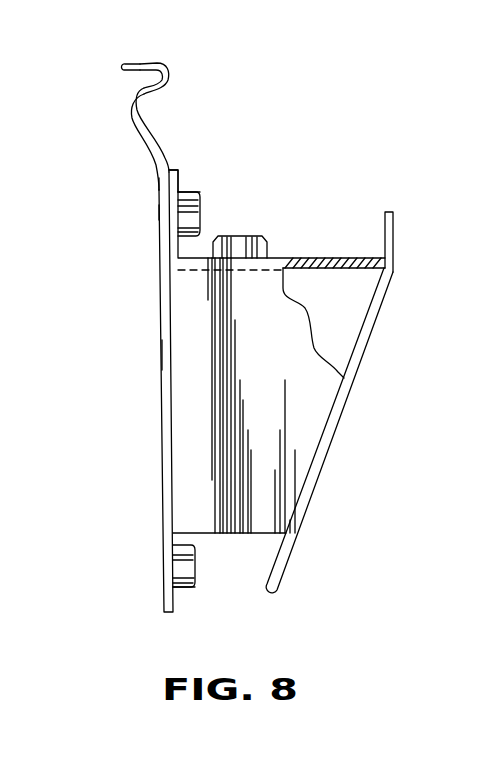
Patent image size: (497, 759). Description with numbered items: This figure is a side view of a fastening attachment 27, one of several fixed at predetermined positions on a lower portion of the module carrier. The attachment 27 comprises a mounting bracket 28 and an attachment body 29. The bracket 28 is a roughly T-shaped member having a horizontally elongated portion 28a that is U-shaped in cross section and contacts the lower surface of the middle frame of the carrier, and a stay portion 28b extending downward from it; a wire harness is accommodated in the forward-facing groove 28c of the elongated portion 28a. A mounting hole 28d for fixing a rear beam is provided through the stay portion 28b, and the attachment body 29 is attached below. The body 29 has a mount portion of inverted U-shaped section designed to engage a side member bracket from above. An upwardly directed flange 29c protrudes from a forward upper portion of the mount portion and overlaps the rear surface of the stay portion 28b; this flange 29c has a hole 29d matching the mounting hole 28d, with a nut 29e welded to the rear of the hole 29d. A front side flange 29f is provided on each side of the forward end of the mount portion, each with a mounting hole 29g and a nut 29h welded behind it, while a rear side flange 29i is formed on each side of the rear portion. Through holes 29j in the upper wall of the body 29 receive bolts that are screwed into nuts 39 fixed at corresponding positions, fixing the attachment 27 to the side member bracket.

The attachment 27 is at (158, 478).
The mounting bracket 28 is at (145, 123).
The horizontally elongated portion 28a is at (168, 75).
The stay portion 28b is at (158, 183).
The forward-facing groove 28c is at (142, 82).
The mounting hole 28d is at (158, 214).
The attachment body 29 is at (298, 416).
The upwardly directed flange 29c is at (183, 177).
The hole 29d is at (204, 209).
The nut 29e is at (197, 192).
The front side flange 29f is at (172, 353).
The mounting hole 29g is at (166, 563).
The nut 29h is at (190, 587).
The rear side flange 29i is at (312, 493).
The through hole 29j is at (236, 272).
The nut 39 is at (264, 247).